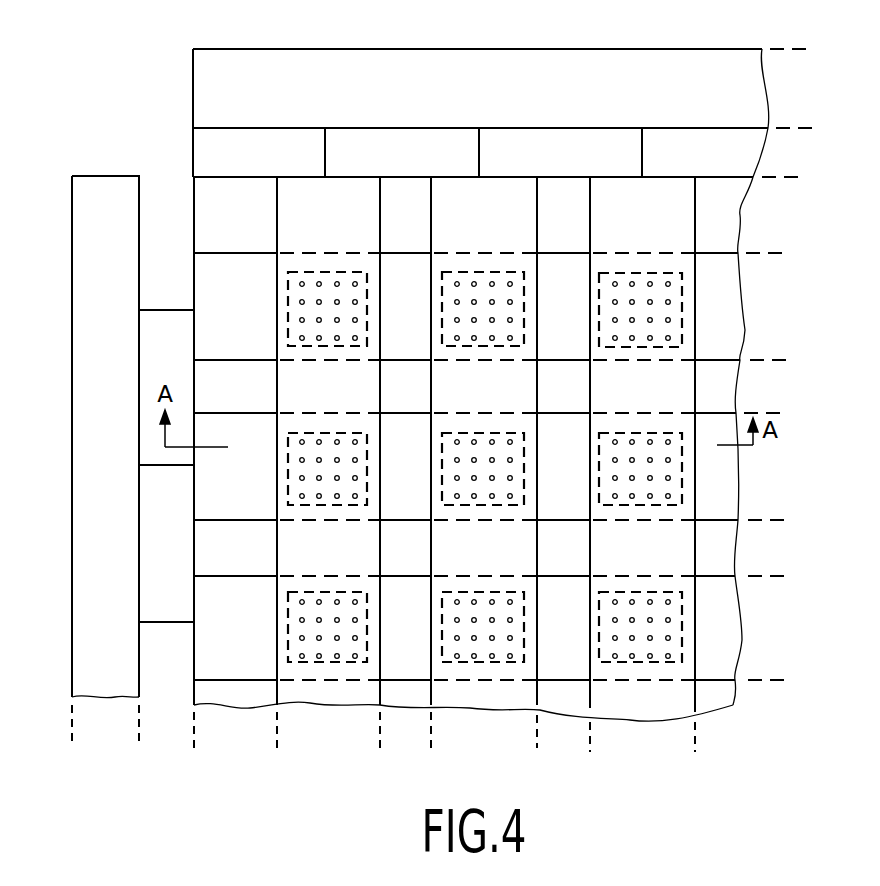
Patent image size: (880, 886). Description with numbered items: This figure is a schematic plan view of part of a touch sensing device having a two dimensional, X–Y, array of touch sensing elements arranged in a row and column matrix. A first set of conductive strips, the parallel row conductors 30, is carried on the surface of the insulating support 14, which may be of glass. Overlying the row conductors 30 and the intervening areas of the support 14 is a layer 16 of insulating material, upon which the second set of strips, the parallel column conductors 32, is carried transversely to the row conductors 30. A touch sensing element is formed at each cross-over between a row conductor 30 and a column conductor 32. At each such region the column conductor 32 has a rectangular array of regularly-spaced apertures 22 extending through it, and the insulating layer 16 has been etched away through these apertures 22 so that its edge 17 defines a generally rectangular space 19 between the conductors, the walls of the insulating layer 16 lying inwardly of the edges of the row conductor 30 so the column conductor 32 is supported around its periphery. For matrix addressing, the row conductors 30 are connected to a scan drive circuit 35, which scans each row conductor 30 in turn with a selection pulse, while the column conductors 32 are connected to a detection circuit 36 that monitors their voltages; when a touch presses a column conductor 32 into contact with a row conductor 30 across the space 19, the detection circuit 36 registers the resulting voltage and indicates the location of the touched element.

The insulating support 14 is at (733, 702).
The insulating layer 16 is at (720, 637).
The edge of insulating layer 17 is at (677, 297).
The space 19 is at (485, 470).
The apertures 22 is at (302, 660).
The row conductors 30 is at (723, 362).
The column conductors 32 is at (431, 202).
The scan drive circuit 35 is at (87, 361).
The detection circuit 36 is at (551, 67).